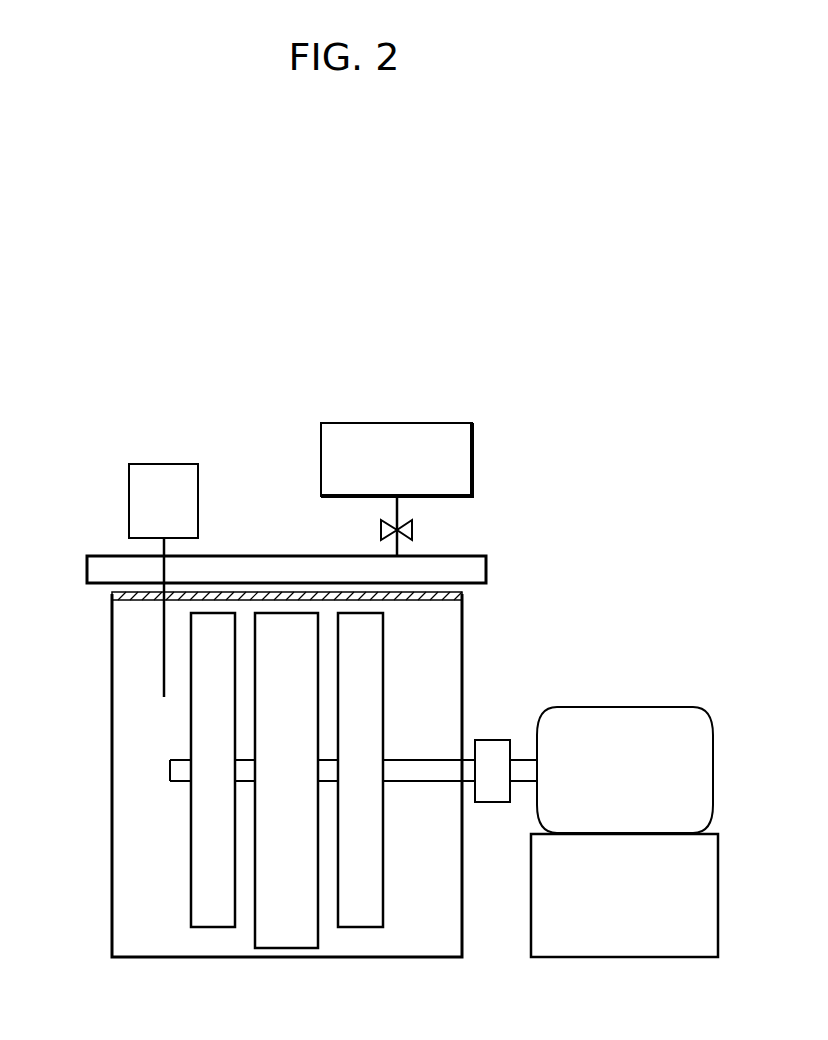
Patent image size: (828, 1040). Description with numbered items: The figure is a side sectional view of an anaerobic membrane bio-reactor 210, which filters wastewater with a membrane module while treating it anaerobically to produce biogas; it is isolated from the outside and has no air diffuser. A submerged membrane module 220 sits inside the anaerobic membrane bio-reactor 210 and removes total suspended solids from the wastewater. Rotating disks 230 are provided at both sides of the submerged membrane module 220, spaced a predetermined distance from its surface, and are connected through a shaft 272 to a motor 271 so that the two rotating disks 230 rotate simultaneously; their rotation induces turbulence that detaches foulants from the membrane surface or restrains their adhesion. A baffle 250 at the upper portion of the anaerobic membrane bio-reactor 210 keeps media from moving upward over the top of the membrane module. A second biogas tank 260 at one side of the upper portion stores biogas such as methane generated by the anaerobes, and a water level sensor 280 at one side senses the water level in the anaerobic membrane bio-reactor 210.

The anaerobic membrane bio-reactor 210 is at (112, 911).
The submerged membrane module 220 is at (292, 932).
The rotating disk 230 is at (214, 920).
The baffle 250 is at (112, 594).
The second biogas tank 260 is at (430, 423).
The motor 271 is at (594, 707).
The shaft 272 is at (522, 758).
The water level sensor 280 is at (145, 464).